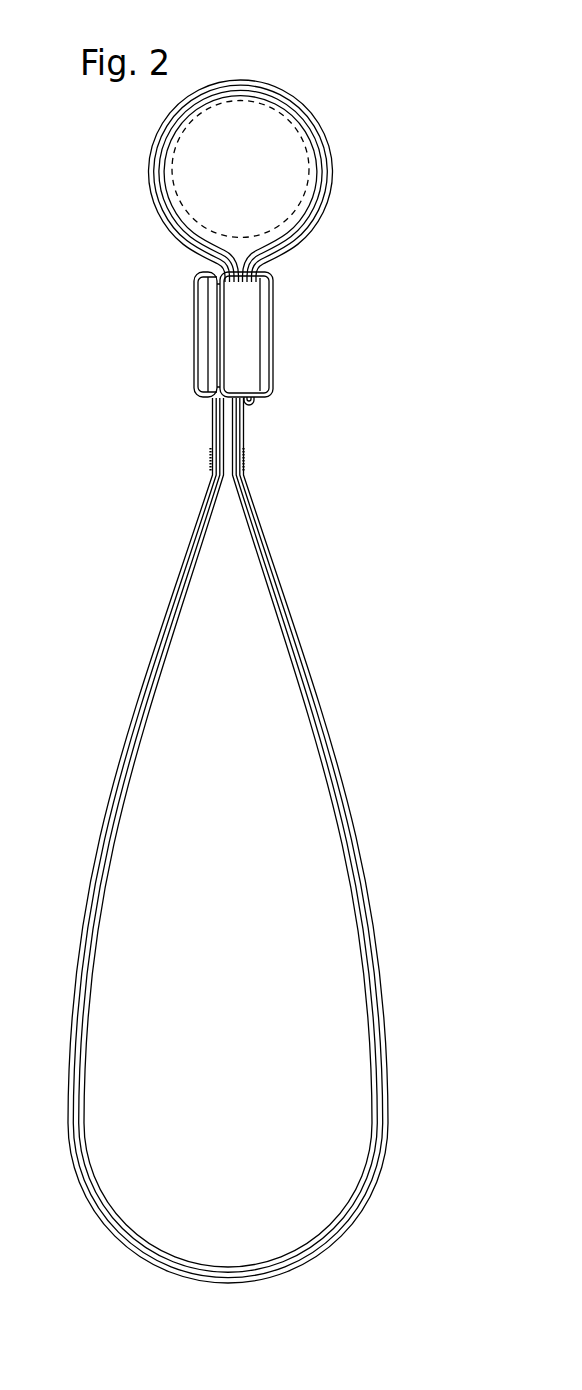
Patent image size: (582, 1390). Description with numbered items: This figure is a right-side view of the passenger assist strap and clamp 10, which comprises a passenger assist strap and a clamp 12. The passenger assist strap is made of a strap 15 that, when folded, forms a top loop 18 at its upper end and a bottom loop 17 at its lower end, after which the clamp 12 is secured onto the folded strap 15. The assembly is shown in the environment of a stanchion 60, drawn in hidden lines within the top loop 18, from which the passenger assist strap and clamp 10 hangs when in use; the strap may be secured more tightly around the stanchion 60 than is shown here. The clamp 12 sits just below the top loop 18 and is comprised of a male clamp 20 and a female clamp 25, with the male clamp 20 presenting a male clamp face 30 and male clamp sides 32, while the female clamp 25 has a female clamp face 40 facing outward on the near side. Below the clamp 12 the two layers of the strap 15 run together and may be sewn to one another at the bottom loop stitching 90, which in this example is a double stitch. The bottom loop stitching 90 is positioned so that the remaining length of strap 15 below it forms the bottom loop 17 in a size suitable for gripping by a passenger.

The passenger assist strap and clamp 10 is at (280, 141).
The clamp 12 is at (250, 351).
The strap 15 is at (257, 510).
The bottom loop 17 is at (196, 840).
The top loop 18 is at (327, 217).
The male clamp 20 is at (295, 358).
The female clamp 25 is at (230, 351).
The male clamp face 30 is at (267, 335).
The male clamp sides 32 is at (247, 355).
The female clamp face 40 is at (200, 338).
The stanchion 60 is at (260, 140).
The bottom loop stitching 90 is at (210, 455).